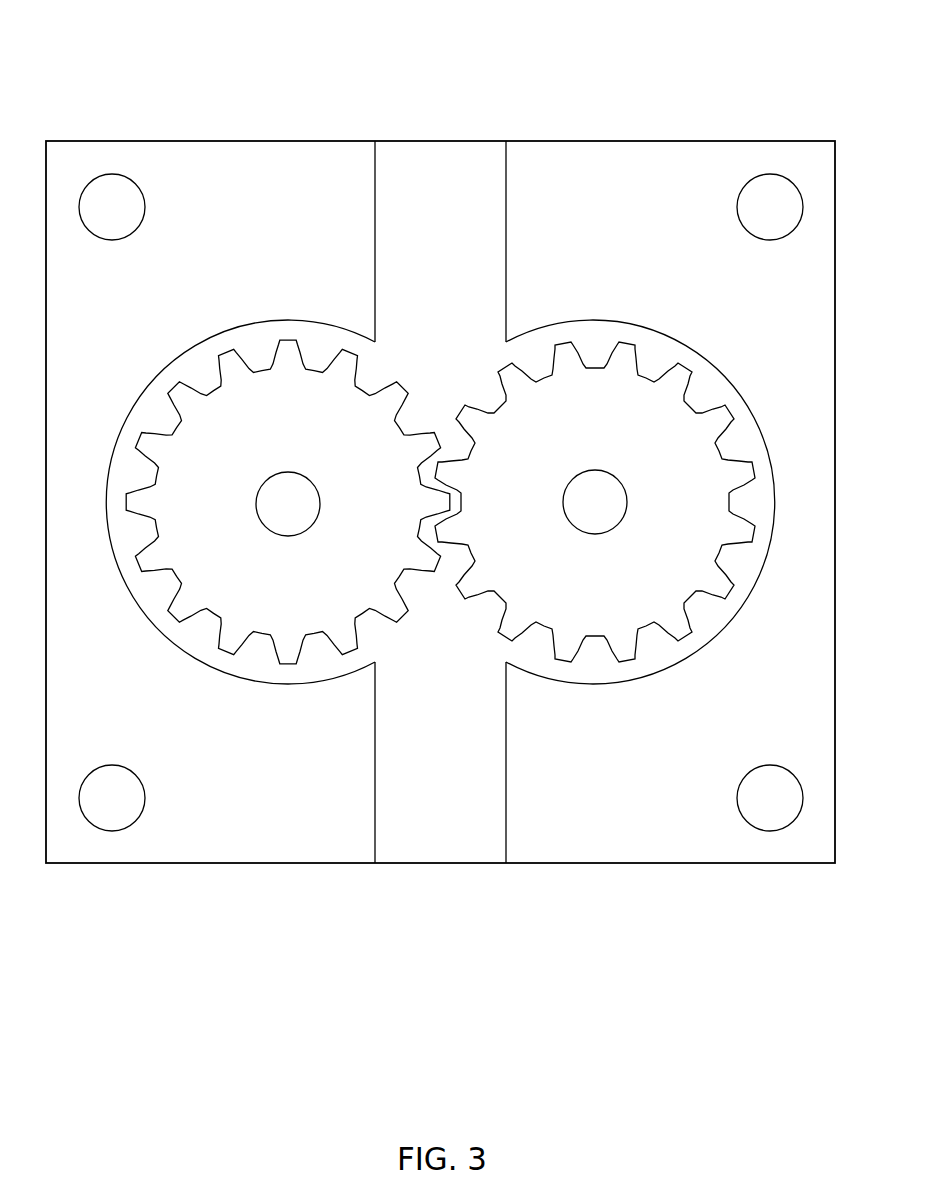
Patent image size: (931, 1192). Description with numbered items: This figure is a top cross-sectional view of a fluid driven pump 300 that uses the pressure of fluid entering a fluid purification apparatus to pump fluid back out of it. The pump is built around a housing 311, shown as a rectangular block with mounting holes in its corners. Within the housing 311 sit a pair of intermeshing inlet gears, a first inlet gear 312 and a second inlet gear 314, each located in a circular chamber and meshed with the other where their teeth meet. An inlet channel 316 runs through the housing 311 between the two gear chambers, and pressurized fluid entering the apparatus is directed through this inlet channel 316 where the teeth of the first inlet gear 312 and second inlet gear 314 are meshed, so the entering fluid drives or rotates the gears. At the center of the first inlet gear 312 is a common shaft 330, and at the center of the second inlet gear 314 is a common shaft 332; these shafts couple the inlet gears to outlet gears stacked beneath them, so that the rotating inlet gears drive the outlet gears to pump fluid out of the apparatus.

The fluid driven pump 300 is at (764, 72).
The housing 311 is at (230, 216).
The first inlet gear 312 is at (306, 438).
The second inlet gear 314 is at (611, 436).
The inlet channel 316 is at (459, 234).
The common shaft 330 is at (300, 511).
The common shaft 332 is at (605, 511).